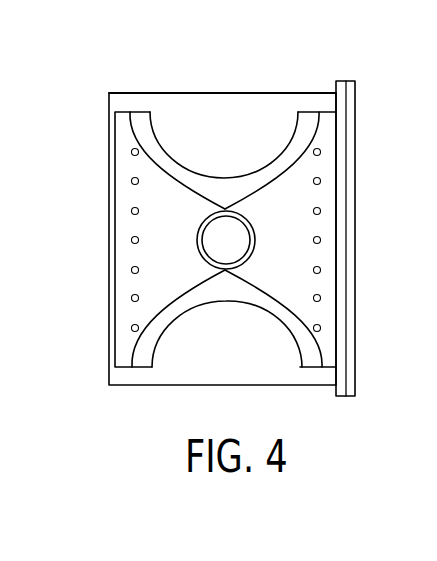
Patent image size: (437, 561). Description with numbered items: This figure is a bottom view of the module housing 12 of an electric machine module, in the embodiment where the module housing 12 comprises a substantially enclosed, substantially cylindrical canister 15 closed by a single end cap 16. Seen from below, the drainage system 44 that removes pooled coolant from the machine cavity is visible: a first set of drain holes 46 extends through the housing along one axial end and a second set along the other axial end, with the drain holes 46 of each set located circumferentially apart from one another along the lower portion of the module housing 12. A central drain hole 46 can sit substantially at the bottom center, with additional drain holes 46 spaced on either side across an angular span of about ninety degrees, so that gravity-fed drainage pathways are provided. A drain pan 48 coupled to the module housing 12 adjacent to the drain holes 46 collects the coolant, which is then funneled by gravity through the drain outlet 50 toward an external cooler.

The module housing 12 is at (161, 79).
The canister 15 is at (287, 93).
The first end cap 16 is at (355, 115).
The drainage system 44 is at (110, 222).
The drain holes 46 is at (134, 298).
The drain pan 48 is at (278, 167).
The drain outlet 50 is at (237, 262).